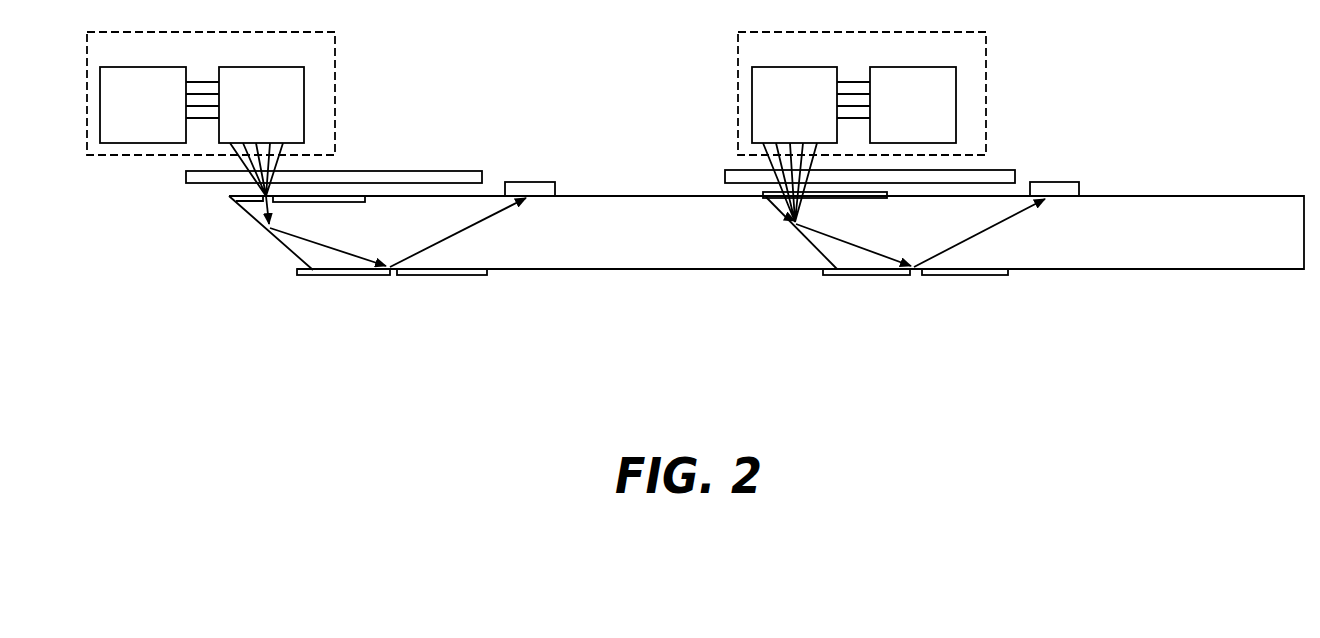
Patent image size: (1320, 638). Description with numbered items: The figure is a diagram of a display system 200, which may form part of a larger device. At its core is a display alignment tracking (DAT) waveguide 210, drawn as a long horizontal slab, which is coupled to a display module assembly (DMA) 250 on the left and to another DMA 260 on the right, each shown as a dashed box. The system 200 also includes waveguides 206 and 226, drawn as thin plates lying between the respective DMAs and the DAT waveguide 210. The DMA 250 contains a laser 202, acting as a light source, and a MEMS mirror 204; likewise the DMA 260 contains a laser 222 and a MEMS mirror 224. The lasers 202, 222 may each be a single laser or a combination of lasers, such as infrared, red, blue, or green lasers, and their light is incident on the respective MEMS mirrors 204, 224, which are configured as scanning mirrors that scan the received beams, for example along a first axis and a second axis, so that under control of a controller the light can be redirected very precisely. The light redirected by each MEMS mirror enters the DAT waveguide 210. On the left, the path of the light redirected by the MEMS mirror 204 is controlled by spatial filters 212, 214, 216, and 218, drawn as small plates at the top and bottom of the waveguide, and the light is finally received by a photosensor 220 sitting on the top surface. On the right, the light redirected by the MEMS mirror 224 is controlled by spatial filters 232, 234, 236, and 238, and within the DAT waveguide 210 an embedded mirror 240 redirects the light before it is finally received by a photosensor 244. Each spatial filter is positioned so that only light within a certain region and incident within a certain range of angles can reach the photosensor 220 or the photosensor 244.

The display system 200 is at (719, 386).
The laser 202 is at (157, 126).
The MEMS mirror 204 is at (275, 136).
The waveguide 206 is at (393, 171).
The display alignment tracking (DAT) waveguide 210 is at (1113, 270).
The spatial filter 212 is at (243, 202).
The spatial filter 214 is at (353, 203).
The spatial filter 216 is at (340, 275).
The spatial filter 218 is at (443, 275).
The photosensor 220 is at (537, 182).
The laser 222 is at (928, 126).
The MEMS mirror 224 is at (808, 136).
The waveguide 226 is at (1000, 170).
The spatial filter 232 is at (772, 200).
The spatial filter 234 is at (852, 198).
The spatial filter 236 is at (862, 275).
The spatial filter 238 is at (965, 275).
The embedded mirror 240 is at (803, 232).
The photosensor 244 is at (1065, 182).
The display module assembly (DMA) 250 is at (244, 93).
The display module assembly (DMA) 260 is at (894, 93).